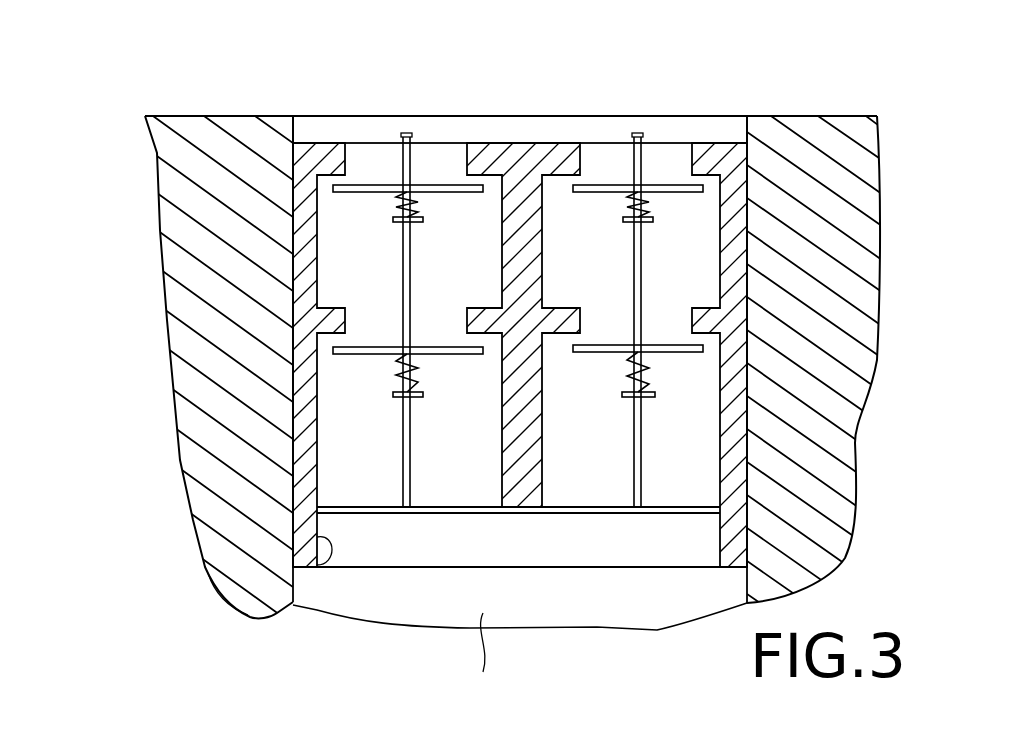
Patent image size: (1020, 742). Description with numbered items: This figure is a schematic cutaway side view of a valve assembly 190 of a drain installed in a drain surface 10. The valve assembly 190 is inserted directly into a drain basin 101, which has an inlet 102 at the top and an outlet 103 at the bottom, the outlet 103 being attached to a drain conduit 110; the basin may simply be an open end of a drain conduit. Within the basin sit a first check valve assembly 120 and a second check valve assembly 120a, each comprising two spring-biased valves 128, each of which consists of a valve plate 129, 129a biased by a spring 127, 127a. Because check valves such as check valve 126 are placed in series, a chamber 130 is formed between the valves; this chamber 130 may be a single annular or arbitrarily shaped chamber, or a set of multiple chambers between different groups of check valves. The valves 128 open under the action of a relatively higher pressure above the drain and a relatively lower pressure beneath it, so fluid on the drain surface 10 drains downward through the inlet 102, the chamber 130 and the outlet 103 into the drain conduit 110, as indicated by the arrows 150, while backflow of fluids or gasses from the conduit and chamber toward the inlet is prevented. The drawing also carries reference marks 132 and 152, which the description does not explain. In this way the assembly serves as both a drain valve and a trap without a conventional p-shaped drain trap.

The drain surface 10 is at (818, 116).
The drain basin 101 is at (748, 125).
The inlet 102 is at (455, 116).
The outlet 103 is at (473, 661).
The drain conduit 110 is at (600, 618).
The first check valve assembly 120 is at (330, 95).
The second check valve assembly 120a is at (706, 100).
The check valve 126 is at (466, 357).
The spring 127 is at (397, 376).
The spring 127a is at (395, 200).
The spring-biased valve 128 is at (401, 195).
The valve plate 129 is at (443, 348).
The valve plate 129a is at (464, 193).
The chamber 130 is at (478, 281).
The wall bottom edge 132 is at (295, 575).
The arrows 150 is at (340, 236).
The outlet 152 is at (603, 493).
The valve assembly 190 is at (567, 75).